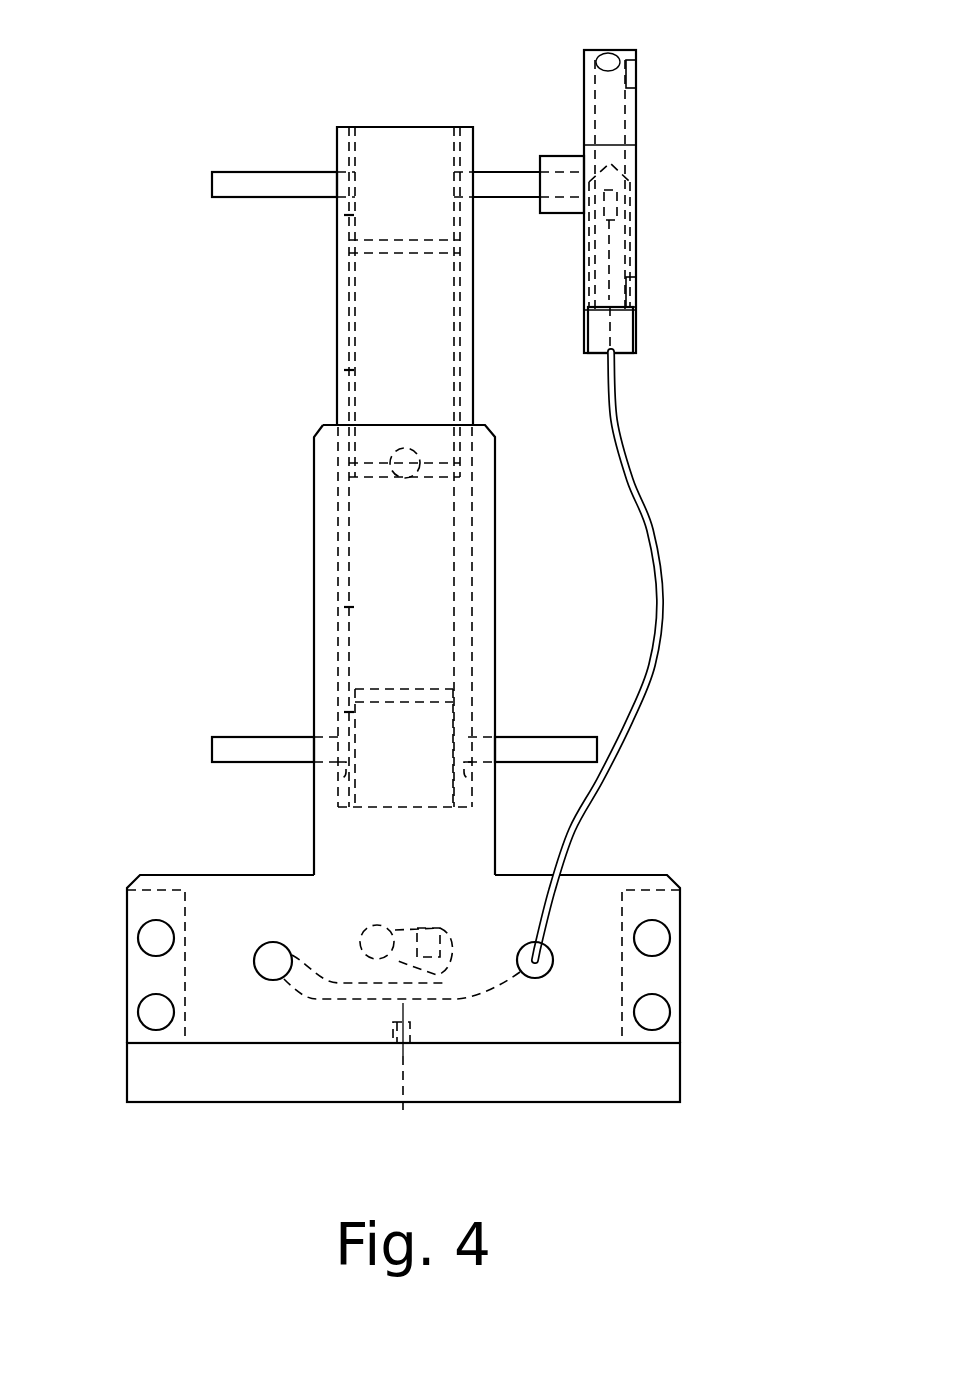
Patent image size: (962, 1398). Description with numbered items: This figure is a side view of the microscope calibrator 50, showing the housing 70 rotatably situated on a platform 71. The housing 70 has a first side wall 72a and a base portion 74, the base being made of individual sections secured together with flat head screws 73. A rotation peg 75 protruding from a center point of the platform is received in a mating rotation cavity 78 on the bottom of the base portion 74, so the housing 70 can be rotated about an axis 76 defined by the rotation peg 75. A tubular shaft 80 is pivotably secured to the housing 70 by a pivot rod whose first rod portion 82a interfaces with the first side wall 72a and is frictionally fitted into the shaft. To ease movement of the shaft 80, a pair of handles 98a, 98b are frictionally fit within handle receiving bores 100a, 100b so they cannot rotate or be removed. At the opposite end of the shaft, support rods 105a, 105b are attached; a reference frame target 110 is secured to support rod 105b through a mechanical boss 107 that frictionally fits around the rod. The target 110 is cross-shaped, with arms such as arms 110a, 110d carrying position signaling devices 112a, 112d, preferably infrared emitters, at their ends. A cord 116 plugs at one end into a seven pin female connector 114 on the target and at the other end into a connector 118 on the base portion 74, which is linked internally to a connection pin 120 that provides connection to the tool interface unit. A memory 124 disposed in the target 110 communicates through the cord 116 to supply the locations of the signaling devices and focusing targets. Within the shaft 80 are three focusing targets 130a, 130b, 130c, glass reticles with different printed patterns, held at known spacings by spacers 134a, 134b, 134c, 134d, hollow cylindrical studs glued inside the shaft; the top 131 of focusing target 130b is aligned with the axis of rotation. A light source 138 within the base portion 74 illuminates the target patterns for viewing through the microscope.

The microscope calibrator 50 is at (236, 88).
The housing 70 is at (278, 574).
The platform 71 is at (650, 1075).
The first side wall 72a is at (320, 515).
The flat head screws 73 is at (150, 938).
The base portion 74 is at (585, 890).
The rotation peg 75 is at (412, 1040).
The axis 76 is at (402, 1060).
The rotation cavity 78 is at (412, 1027).
The tubular shaft 80 is at (337, 318).
The first rod portion 82a is at (395, 452).
The handle 98a is at (235, 745).
The handle 98b is at (530, 742).
The handle receiving bore 100a is at (335, 773).
The handle receiving bore 100b is at (478, 773).
The support rod 105a is at (240, 180).
The support rod 105b is at (485, 170).
The mechanical boss 107 is at (563, 215).
The reference frame target 110 is at (659, 38).
The arm 110a is at (604, 50).
The arm 110d is at (583, 318).
The position signaling device 112a is at (640, 70).
The position signaling device 112d is at (640, 292).
The seven pin female connector 114 is at (622, 338).
The cord 116 is at (655, 528).
The seven pin female connector 118 is at (545, 967).
The connection pin 120 is at (265, 962).
The memory 124 is at (612, 205).
The focusing target 130a is at (408, 243).
The focusing target 130b is at (450, 472).
The focusing target 130c is at (408, 688).
The top of focusing target 131 is at (442, 462).
The spacer 134a is at (348, 215).
The spacer 134b is at (348, 370).
The spacer 134c is at (347, 607).
The spacer 134d is at (340, 712).
The light source 138 is at (375, 928).